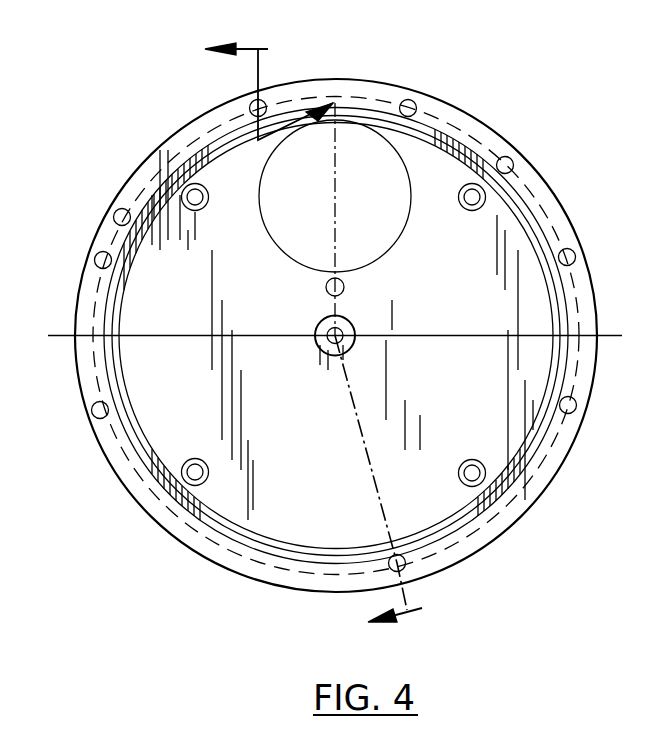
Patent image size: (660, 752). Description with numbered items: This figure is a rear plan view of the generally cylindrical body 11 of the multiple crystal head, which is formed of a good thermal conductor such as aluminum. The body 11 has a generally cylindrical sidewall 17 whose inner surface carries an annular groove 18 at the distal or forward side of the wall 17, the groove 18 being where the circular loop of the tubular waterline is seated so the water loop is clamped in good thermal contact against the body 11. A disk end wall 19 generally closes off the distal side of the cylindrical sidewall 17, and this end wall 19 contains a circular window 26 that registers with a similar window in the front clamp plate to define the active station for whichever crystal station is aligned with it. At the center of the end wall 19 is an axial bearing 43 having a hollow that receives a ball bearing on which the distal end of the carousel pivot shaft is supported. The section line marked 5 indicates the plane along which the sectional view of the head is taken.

The section line 5- 5 is at (300, 333).
The body 11 is at (612, 469).
The cylindrical sidewall 17 is at (508, 142).
The annular groove 18 is at (537, 195).
The disk end wall 19 is at (540, 293).
The circular window 26 is at (310, 202).
The axial bearing 43 is at (352, 323).